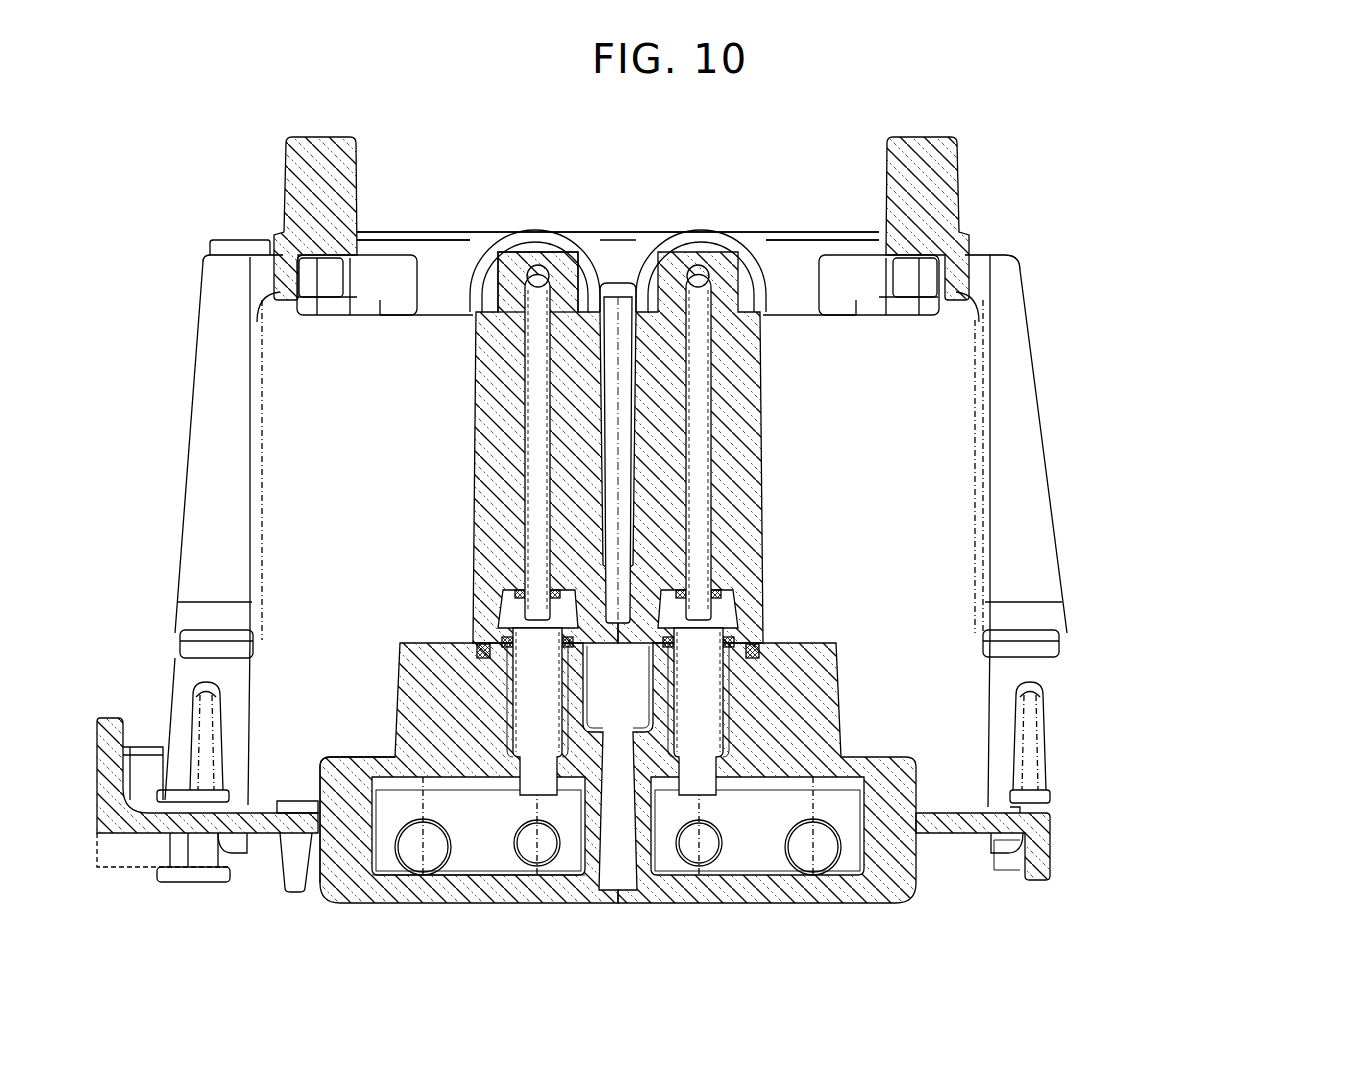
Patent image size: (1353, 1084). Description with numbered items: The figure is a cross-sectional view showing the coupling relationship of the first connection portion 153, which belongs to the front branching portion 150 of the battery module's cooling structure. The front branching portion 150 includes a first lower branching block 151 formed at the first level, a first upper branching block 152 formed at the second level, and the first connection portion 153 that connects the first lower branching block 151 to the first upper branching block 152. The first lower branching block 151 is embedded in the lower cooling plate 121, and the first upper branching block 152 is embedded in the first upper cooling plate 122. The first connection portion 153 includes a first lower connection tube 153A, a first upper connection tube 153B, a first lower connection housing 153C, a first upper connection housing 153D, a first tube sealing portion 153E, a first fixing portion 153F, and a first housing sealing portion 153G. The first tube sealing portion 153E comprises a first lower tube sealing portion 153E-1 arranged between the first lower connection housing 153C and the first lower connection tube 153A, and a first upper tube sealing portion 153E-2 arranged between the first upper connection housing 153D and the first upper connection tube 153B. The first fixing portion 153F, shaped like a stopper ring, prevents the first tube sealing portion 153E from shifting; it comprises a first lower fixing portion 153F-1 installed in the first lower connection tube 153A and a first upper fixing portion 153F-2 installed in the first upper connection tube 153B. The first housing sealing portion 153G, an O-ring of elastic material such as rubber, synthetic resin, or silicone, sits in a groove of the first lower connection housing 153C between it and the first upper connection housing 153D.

The front branching portion 150 is at (1040, 208).
The first upper cooling plate 122 is at (447, 258).
The first upper branching block 152 is at (568, 265).
The lower cooling plate 121 is at (317, 845).
The first lower branching block 151 is at (482, 860).
The first connection portion 153 is at (815, 536).
The first lower connection tube 153A is at (725, 673).
The first upper connection tube 153B is at (722, 463).
The first lower connection housing 153C is at (817, 737).
The first upper connection housing 153D is at (752, 417).
The first tube sealing portion 153E is at (873, 572).
The first lower tube sealing portion 153E-1 is at (568, 640).
The first upper tube sealing portion 153E-2 is at (550, 592).
The first fixing portion 153F is at (953, 618).
The first lower fixing portion 153F-1 is at (727, 643).
The first upper fixing portion 153F-2 is at (737, 600).
The first housing sealing portion 153G is at (492, 656).